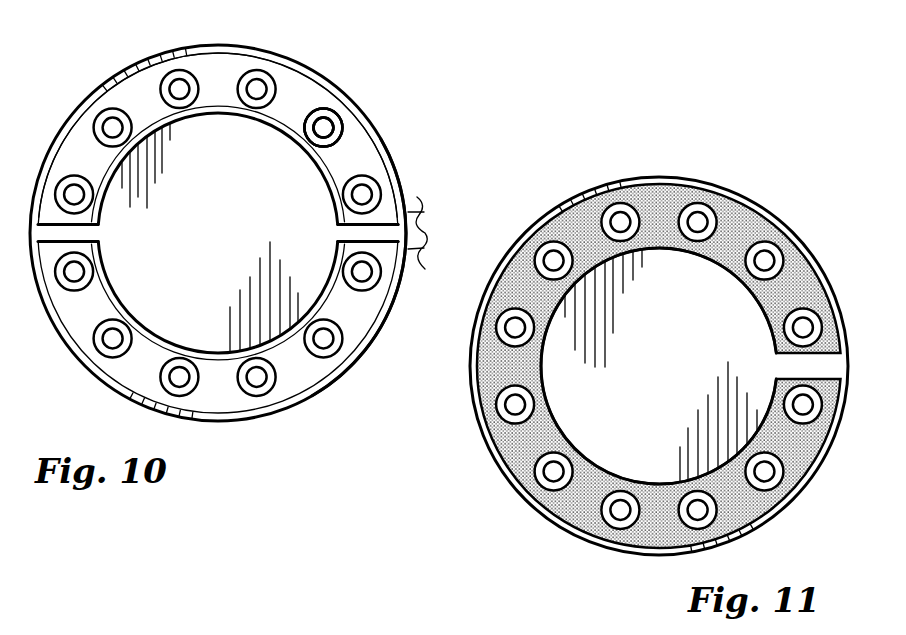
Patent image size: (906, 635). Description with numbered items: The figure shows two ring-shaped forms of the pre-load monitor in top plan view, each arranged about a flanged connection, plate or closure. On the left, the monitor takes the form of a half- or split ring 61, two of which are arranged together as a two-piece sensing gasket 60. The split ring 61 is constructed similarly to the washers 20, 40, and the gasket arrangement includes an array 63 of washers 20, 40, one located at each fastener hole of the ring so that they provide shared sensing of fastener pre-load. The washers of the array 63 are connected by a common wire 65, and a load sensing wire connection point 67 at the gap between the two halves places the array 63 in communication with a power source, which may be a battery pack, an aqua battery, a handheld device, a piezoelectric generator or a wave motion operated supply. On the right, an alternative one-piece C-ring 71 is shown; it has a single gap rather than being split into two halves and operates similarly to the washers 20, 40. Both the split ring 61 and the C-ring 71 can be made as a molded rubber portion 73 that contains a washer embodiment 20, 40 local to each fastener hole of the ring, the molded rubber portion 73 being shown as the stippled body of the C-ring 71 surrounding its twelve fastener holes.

In FIG. 10, the two-piece sensing gasket 60 is at (266, 436).
In FIG. 10, the half- or split ring 61 is at (380, 333).
In FIG. 10, the array of washers 63 is at (152, 109).
In FIG. 10, the wire 65 is at (286, 117).
In FIG. 10, the washer 20 is at (340, 112).
In FIG. 10, the washer 40 is at (323, 128).
In FIG. 10, the load sensing wire connection point 67 is at (417, 197).
In FIG. 11, the one-piece C-ring 71 is at (667, 190).
In FIG. 11, the molded portion of ring 73 is at (530, 436).